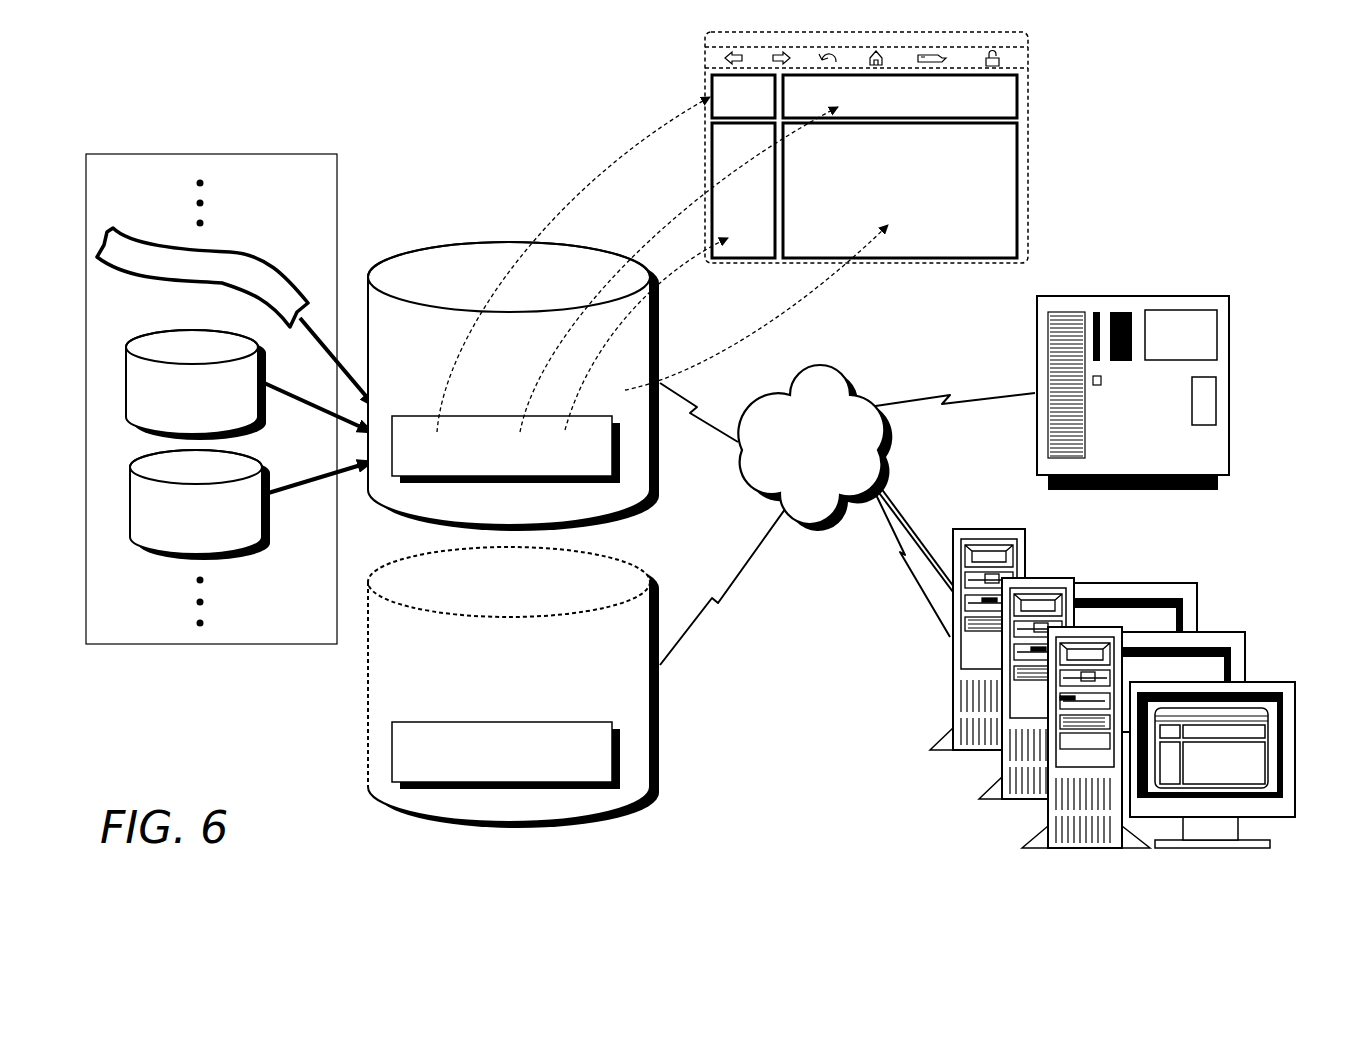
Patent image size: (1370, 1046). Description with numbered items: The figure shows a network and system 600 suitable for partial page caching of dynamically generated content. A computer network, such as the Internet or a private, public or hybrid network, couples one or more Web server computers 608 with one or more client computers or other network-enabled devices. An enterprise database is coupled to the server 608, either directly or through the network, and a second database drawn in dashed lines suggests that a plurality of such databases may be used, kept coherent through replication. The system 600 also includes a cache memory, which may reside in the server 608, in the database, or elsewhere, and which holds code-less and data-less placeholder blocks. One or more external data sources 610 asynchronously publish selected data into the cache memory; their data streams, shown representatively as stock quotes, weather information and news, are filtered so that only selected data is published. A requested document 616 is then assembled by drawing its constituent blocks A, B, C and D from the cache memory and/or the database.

The system 600 is at (200, 78).
The Web server computer 608 is at (1224, 378).
The external data sources 610 is at (290, 155).
The requested document 616 is at (676, 73).